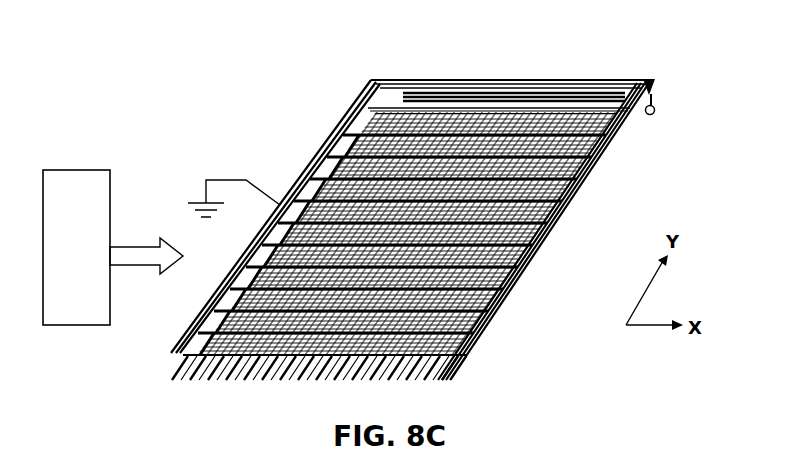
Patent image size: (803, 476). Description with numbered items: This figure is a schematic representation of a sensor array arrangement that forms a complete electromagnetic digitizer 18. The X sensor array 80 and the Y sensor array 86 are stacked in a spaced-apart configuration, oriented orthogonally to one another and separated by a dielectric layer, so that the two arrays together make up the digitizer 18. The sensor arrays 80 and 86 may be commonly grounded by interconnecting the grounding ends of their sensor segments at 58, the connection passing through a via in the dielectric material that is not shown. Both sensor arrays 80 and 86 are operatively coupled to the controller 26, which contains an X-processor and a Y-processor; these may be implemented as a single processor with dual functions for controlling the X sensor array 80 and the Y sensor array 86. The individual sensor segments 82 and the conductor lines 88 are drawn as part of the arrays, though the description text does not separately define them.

The electromagnetic digitizer 18 is at (424, 222).
The controller 26 is at (113, 247).
The grounding interconnection 58 is at (648, 83).
The X sensor array 80 is at (600, 185).
The column electrodes 82 is at (227, 373).
The Y sensor array 86 is at (540, 63).
The conductive traces 88 is at (433, 112).